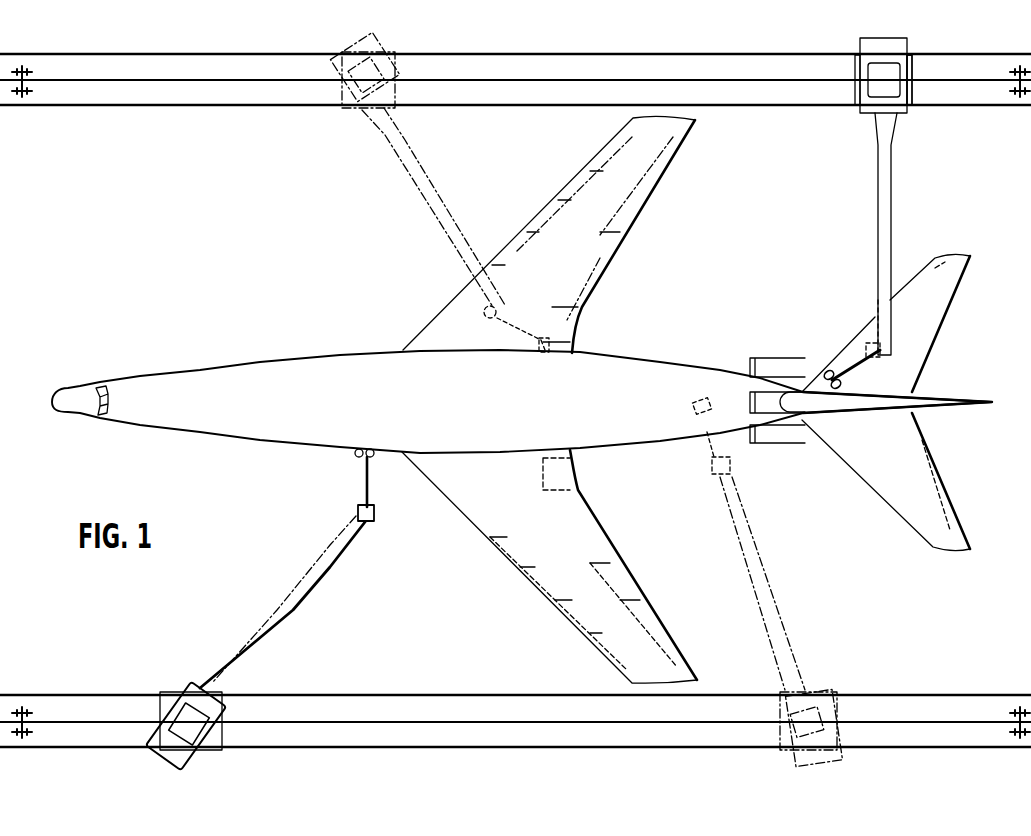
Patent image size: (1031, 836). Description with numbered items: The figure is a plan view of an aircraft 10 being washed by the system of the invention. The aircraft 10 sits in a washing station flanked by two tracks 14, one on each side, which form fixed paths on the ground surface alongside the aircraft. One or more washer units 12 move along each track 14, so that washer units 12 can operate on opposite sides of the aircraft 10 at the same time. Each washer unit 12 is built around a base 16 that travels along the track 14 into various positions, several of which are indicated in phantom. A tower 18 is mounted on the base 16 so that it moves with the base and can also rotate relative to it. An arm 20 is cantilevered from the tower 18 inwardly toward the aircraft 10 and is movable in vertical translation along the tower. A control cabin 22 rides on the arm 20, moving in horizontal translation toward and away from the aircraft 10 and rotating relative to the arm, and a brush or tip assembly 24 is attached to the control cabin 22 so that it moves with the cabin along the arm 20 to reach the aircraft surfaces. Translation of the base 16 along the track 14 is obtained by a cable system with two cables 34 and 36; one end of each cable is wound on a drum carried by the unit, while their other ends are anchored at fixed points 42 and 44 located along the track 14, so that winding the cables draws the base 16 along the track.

The aircraft 10 is at (458, 411).
The washer unit 12 is at (388, 43).
The track 14 is at (576, 54).
The base 16 is at (912, 106).
The tower 18 is at (893, 89).
The arm 20 is at (876, 205).
The control cabin 22 is at (884, 365).
The brush or tip assembly 24 is at (836, 369).
The cable 34 is at (188, 80).
The cable 36 is at (938, 80).
The fixed anchor point 42 is at (32, 75).
The fixed anchor point 44 is at (1010, 92).